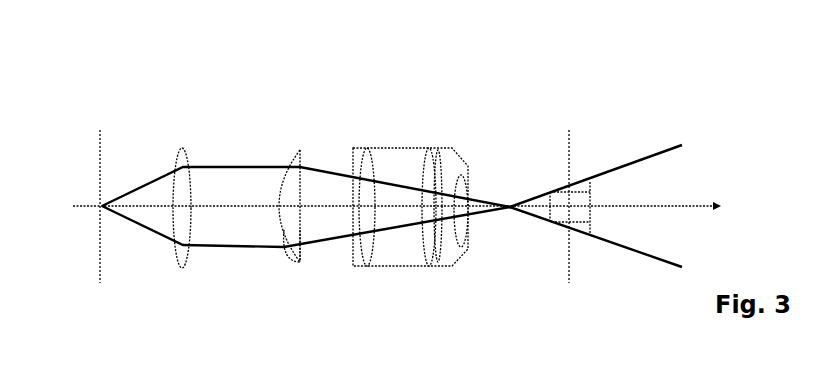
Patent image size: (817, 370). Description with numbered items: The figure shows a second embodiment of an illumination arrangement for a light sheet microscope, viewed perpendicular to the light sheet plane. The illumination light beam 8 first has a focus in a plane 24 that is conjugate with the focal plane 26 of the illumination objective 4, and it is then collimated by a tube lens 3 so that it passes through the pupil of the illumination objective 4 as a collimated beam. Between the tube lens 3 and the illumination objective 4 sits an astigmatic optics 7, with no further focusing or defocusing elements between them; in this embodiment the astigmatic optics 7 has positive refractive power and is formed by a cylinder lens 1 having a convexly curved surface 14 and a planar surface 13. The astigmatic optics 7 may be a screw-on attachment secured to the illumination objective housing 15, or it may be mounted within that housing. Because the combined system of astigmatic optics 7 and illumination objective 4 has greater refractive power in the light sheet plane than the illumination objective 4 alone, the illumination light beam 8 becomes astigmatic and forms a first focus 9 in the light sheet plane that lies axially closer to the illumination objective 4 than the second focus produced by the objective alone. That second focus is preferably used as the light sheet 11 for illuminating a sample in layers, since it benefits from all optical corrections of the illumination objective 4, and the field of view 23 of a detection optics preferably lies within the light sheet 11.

The cylinder lens 1 is at (293, 157).
The tube lens 3 is at (185, 160).
The illumination objective 4 is at (410, 103).
The astigmatic optics 7 is at (290, 96).
The illumination light beam 8 is at (152, 190).
The first focus 9 is at (506, 192).
The light sheet 11 is at (577, 188).
The planar surface 13 is at (303, 256).
The convexly curved surface 14 is at (283, 252).
The illumination objective housing 15 is at (393, 268).
The field of view 23 is at (585, 203).
The plane 24 is at (100, 183).
The focal plane 26 is at (572, 131).